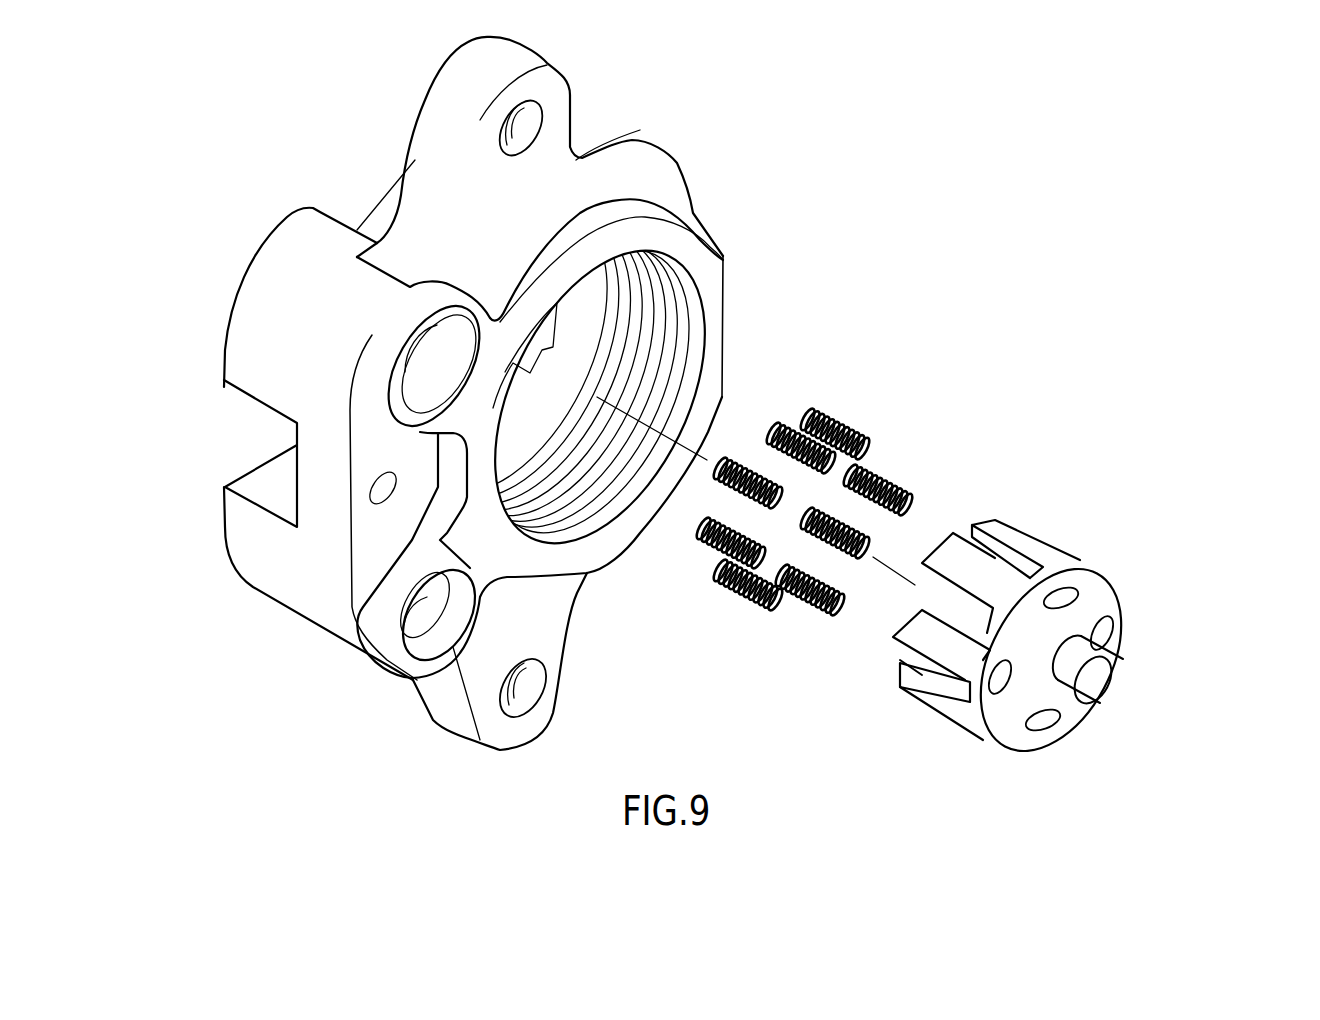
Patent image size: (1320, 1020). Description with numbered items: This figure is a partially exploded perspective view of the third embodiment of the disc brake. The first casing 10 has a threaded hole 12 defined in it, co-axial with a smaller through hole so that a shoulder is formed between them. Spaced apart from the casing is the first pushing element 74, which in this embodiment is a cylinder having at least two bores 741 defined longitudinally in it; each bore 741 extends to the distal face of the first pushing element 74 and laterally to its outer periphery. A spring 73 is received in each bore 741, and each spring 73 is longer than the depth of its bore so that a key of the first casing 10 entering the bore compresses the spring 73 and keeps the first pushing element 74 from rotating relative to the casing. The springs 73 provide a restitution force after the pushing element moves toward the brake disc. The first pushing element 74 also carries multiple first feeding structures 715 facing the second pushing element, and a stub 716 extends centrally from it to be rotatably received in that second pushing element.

The first casing 10 is at (330, 302).
The threaded hole 12 is at (597, 483).
The spring 73 is at (835, 425).
The first pushing element 74 is at (1000, 518).
The bore 741 is at (900, 660).
The first feeding structure 715 is at (1052, 722).
The stub 716 is at (1090, 680).